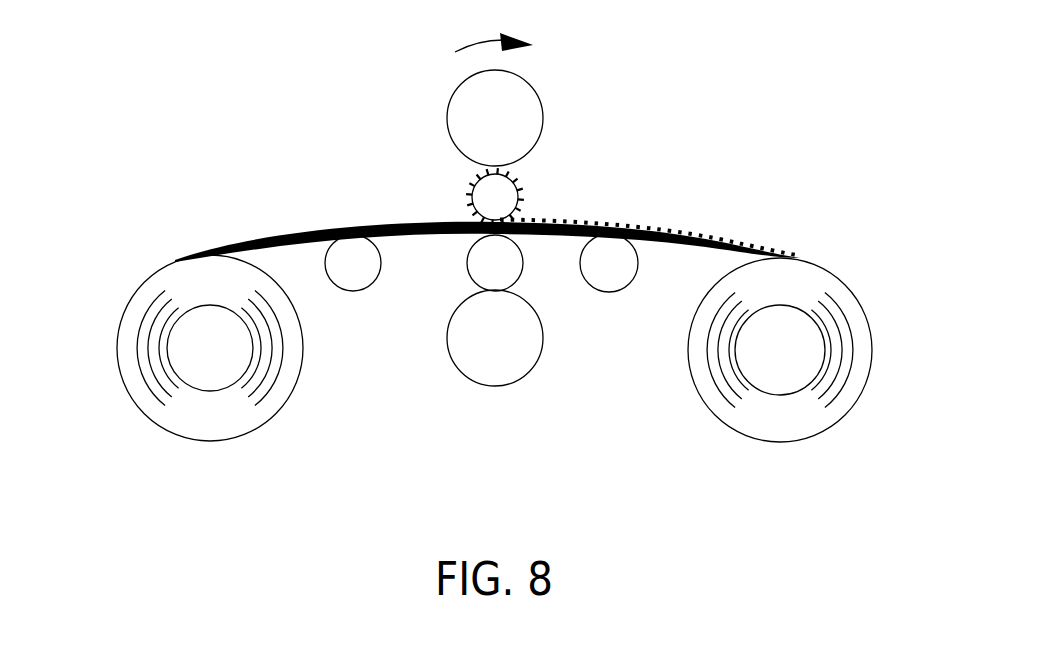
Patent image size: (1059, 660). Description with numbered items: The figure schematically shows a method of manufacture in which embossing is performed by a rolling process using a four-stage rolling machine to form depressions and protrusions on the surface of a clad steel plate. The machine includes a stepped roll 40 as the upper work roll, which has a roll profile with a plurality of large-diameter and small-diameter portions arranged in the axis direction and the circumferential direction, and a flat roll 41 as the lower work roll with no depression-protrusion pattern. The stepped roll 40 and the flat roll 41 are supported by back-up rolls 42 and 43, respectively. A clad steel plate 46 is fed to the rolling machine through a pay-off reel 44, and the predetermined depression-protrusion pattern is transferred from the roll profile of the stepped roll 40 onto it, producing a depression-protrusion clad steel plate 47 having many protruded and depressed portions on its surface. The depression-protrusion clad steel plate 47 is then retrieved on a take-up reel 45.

The stepped roll 40 is at (467, 178).
The flat roll 41 is at (466, 264).
The back-up roll 42 is at (450, 102).
The back-up roll 43 is at (530, 379).
The pay-off reel 44 is at (120, 378).
The take-up reel 45 is at (818, 264).
The clad steel plate 46 is at (247, 245).
The depression-protrusion clad steel plate 47 is at (640, 226).